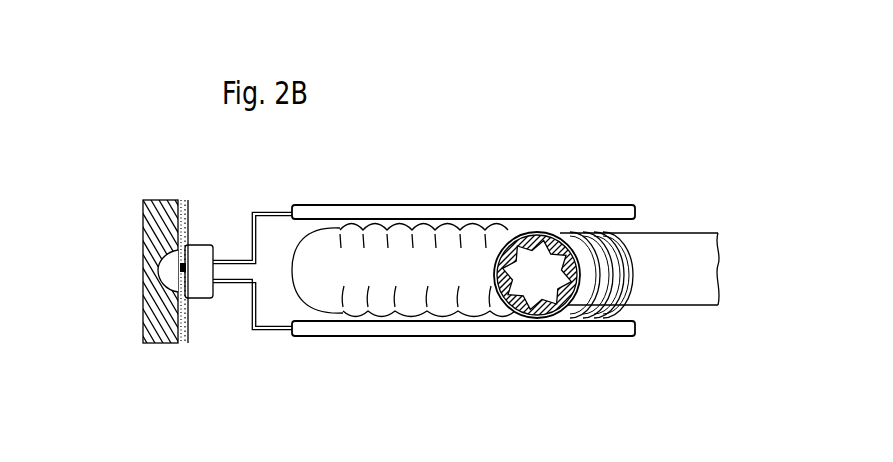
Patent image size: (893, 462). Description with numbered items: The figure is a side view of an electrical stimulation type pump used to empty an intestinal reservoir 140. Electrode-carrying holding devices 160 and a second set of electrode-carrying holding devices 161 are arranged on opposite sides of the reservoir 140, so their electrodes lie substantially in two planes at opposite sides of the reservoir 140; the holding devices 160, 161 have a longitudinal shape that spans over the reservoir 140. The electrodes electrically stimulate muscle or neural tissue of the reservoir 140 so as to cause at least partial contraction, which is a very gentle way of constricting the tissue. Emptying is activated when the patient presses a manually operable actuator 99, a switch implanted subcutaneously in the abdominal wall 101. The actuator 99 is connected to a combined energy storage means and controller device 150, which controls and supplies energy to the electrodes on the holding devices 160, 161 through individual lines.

The abdominal wall 101 is at (143, 230).
The manually operable actuator 99 is at (150, 278).
The combined energy storage means and controller device 150 is at (207, 247).
The intestinal reservoir 140 is at (505, 307).
The second set of electrode-carrying holding devices 161 is at (627, 207).
The electrode-carrying holding devices 160 is at (622, 334).